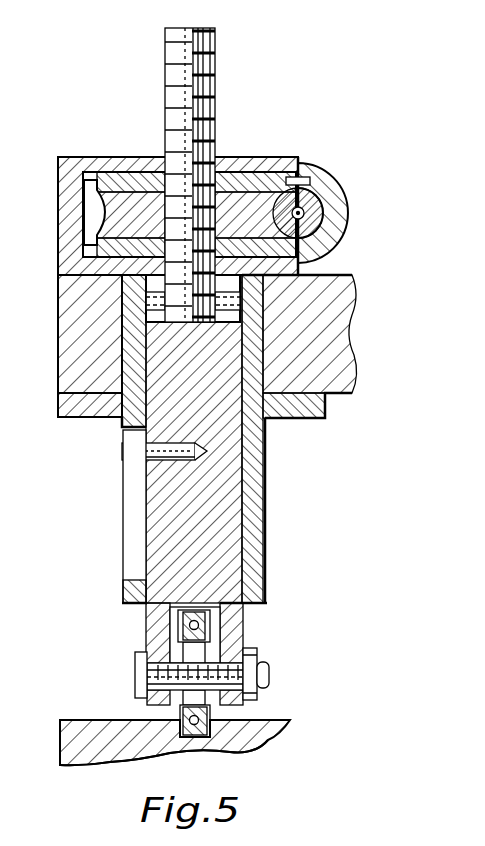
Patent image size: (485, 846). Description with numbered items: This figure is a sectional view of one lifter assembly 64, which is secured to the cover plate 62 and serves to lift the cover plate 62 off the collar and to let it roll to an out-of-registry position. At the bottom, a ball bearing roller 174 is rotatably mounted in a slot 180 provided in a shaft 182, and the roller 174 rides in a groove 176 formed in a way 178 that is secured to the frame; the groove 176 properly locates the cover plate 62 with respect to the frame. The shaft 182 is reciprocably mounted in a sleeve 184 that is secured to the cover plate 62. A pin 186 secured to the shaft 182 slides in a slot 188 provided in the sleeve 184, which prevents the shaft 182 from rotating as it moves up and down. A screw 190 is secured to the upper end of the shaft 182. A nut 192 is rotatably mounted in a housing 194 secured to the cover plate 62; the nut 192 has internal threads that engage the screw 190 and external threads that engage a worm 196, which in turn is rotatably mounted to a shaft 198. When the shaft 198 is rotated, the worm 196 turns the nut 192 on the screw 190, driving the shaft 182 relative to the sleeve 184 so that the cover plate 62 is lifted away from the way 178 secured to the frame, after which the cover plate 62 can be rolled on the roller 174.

The lifter assembly 64 is at (105, 118).
The cover plate 62 is at (337, 384).
The ball bearing roller 174 is at (227, 622).
The groove 176 is at (230, 754).
The way 178 is at (272, 726).
The slot 180 is at (177, 620).
The shaft 182 is at (237, 526).
The sleeve 184 is at (302, 412).
The pin 186 is at (132, 448).
The slot 188 is at (130, 511).
The screw 190 is at (214, 72).
The nut 192 is at (245, 172).
The housing 194 is at (70, 225).
The worm 196 is at (312, 167).
The shaft 198 is at (306, 214).